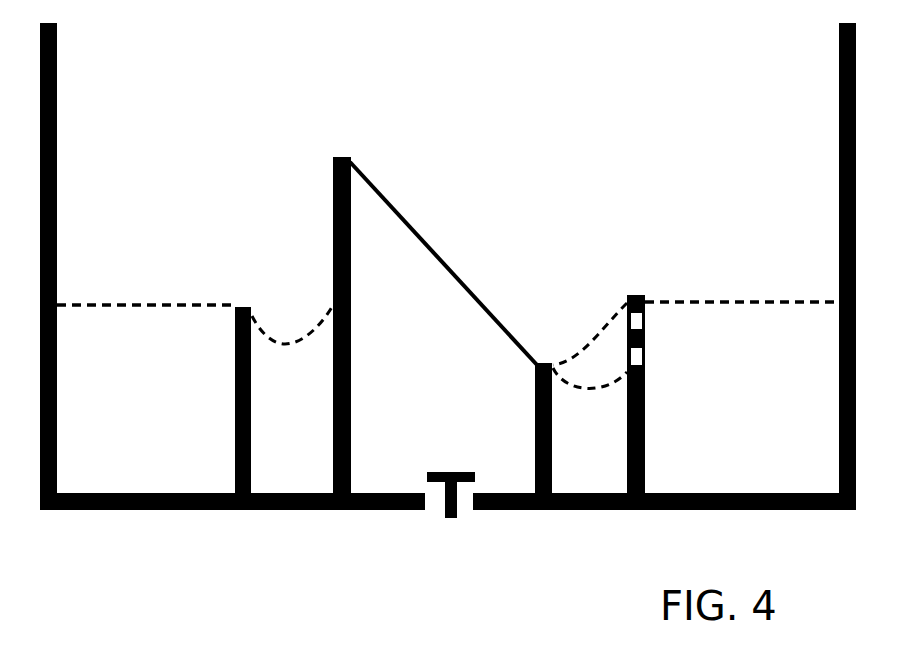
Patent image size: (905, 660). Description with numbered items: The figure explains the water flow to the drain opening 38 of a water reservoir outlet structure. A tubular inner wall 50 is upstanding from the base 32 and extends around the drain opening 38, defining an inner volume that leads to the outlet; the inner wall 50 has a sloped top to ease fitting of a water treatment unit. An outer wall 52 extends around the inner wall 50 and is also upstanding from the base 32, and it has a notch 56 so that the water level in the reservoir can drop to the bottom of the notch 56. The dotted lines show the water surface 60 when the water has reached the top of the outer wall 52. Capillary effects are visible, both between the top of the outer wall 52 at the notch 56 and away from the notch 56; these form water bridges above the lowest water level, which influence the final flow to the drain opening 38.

The base 32 is at (143, 493).
The drain opening 38 is at (436, 471).
The inner wall 50 is at (333, 190).
The outer wall 52 is at (235, 413).
The notch 56 is at (646, 333).
The water surface 60 is at (153, 302).